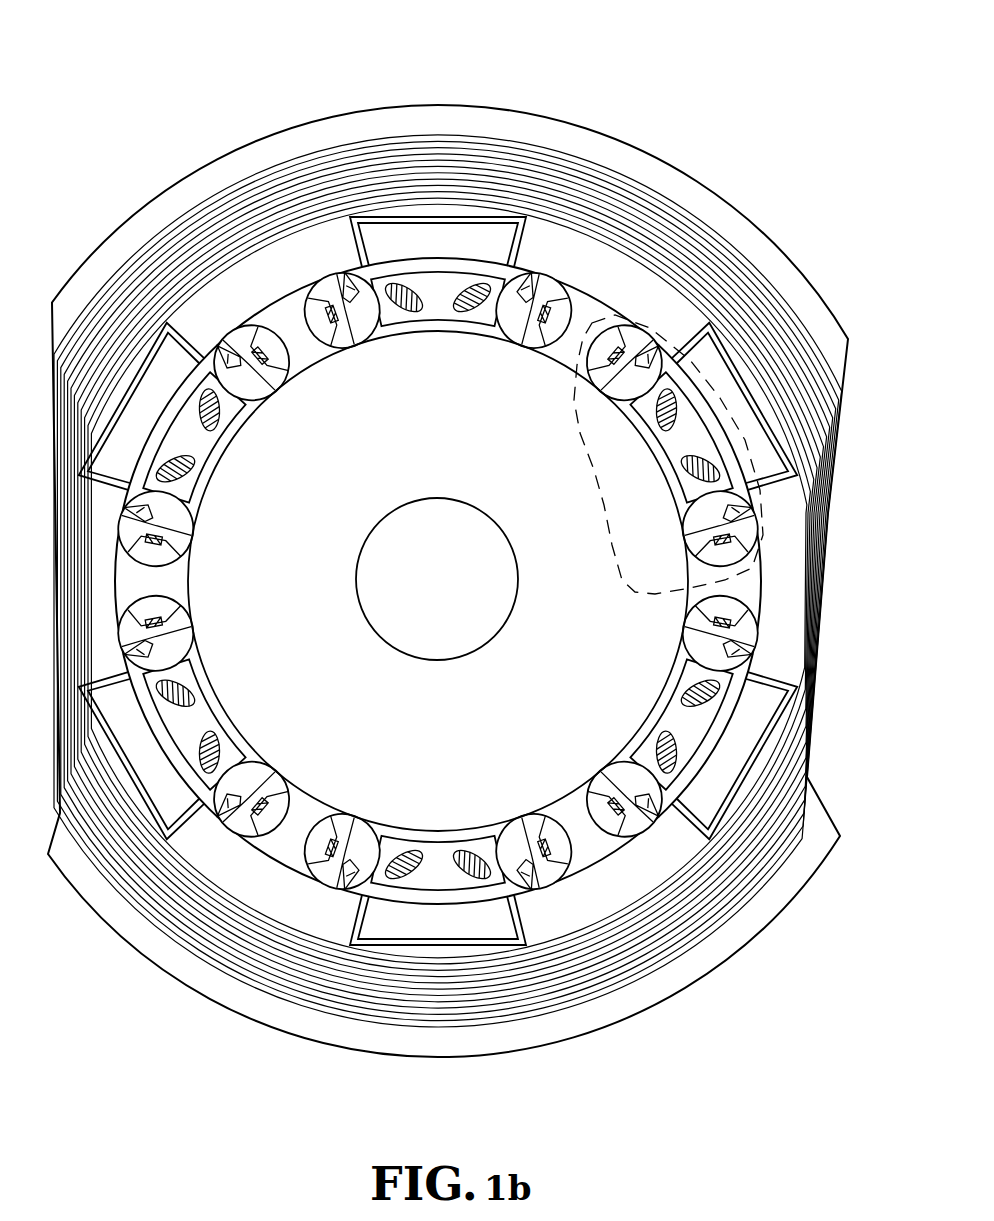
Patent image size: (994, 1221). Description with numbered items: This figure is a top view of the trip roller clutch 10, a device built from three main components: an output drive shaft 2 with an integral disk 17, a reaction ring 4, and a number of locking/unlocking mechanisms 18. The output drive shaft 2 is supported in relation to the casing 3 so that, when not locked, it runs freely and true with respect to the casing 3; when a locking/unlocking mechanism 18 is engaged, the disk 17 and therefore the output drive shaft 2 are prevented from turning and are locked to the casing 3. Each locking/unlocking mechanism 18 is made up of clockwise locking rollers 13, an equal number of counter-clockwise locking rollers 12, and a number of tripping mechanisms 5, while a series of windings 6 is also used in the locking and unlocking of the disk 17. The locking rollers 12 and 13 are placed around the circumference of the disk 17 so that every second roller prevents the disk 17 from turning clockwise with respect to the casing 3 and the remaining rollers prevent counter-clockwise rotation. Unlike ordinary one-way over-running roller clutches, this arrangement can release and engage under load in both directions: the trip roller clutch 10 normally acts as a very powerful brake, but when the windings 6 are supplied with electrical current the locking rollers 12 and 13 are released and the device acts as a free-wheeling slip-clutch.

The output drive shaft 2 is at (448, 598).
The casing 3 is at (430, 106).
The reaction ring 4 is at (448, 581).
The tripping mechanism 5 is at (437, 282).
The windings 6 is at (167, 243).
The trip roller clutch 10 is at (647, 108).
The counter-clockwise locking roller 12 is at (283, 357).
The clockwise locking roller 13 is at (367, 336).
The disk 17 is at (447, 420).
The locking/unlocking mechanism 18 is at (586, 465).